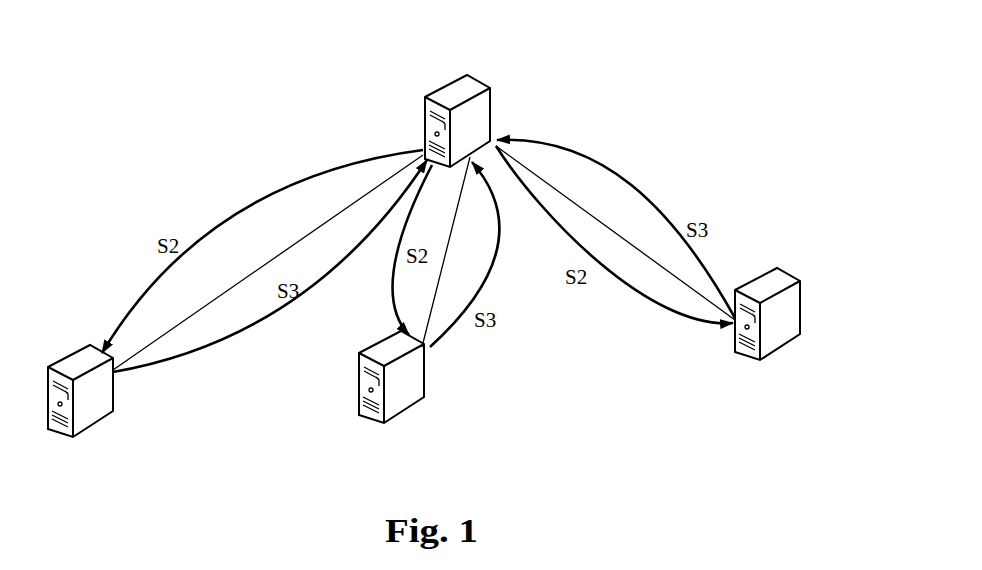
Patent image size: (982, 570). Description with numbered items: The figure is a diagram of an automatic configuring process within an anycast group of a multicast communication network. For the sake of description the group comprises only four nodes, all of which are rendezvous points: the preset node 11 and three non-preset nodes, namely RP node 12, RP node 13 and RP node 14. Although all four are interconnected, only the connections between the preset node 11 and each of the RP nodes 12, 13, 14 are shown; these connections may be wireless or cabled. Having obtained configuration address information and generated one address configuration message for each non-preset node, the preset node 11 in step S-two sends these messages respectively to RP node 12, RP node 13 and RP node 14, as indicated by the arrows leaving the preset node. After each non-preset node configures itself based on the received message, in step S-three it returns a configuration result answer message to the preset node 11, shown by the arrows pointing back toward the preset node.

The preset node 11 is at (467, 80).
The RP node 12 is at (79, 360).
The RP node 13 is at (418, 397).
The RP node 14 is at (780, 285).